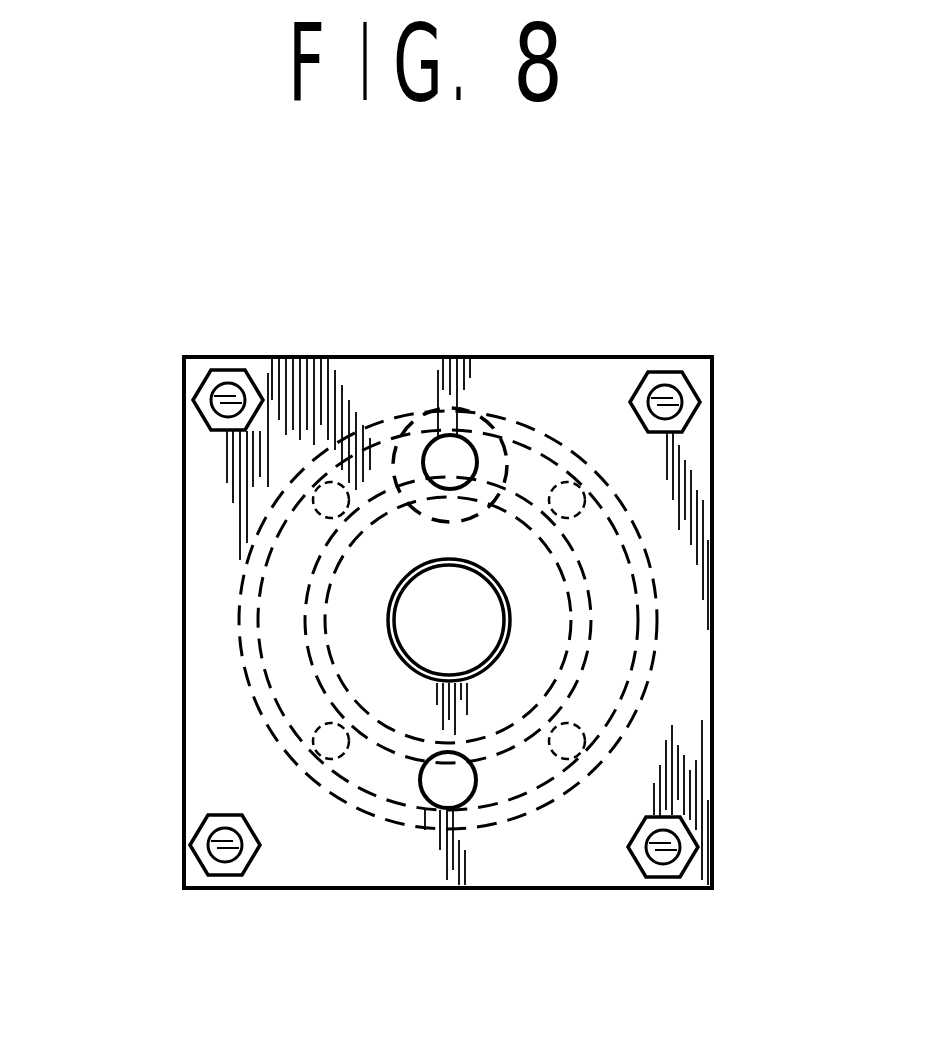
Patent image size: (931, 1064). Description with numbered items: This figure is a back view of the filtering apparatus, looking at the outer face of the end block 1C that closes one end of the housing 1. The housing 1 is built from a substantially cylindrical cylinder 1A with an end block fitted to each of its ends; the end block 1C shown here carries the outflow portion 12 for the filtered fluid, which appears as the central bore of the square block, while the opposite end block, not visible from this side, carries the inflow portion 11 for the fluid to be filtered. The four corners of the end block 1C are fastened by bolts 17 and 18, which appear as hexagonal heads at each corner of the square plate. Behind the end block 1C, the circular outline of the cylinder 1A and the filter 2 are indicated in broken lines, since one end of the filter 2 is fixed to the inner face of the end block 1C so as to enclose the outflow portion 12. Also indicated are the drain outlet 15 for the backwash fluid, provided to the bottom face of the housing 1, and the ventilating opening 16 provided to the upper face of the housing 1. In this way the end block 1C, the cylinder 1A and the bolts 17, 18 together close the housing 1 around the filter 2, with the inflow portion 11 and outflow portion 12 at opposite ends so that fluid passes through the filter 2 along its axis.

The housing 1 is at (638, 322).
The cylinder 1A is at (545, 433).
The end block 1C is at (712, 465).
The filter 2 is at (590, 597).
The inflow portion 11 is at (486, 445).
The outflow portion 12 is at (420, 676).
The drain outlet 15 is at (472, 790).
The ventilating opening 16 is at (416, 446).
The bolt 17 is at (215, 402).
The bolt 18 is at (229, 372).